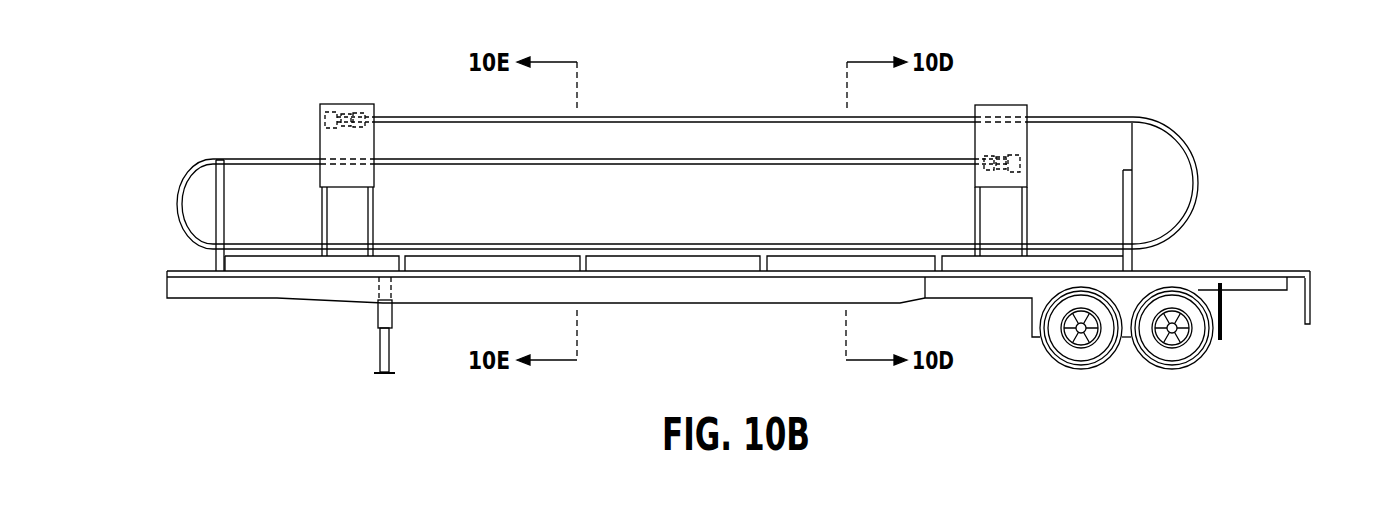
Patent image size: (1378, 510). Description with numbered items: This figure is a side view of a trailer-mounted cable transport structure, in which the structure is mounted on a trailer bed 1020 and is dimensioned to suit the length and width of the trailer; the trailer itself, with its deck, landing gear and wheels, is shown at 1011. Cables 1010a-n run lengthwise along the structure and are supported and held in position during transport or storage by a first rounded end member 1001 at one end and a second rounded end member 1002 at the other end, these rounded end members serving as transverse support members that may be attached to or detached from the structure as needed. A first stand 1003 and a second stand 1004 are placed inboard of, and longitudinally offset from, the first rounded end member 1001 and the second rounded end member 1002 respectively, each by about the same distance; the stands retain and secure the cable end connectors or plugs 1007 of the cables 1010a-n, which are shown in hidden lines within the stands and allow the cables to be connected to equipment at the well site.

The first rounded end member 1001 is at (192, 172).
The second rounded end member 1002 is at (1173, 132).
The first stand 1003 is at (348, 104).
The second stand 1004 is at (1008, 105).
The plug 1007 is at (325, 112).
The cables 1010a-n is at (678, 117).
The trailer 1011 is at (668, 278).
The trailer bed 1020 is at (1245, 271).